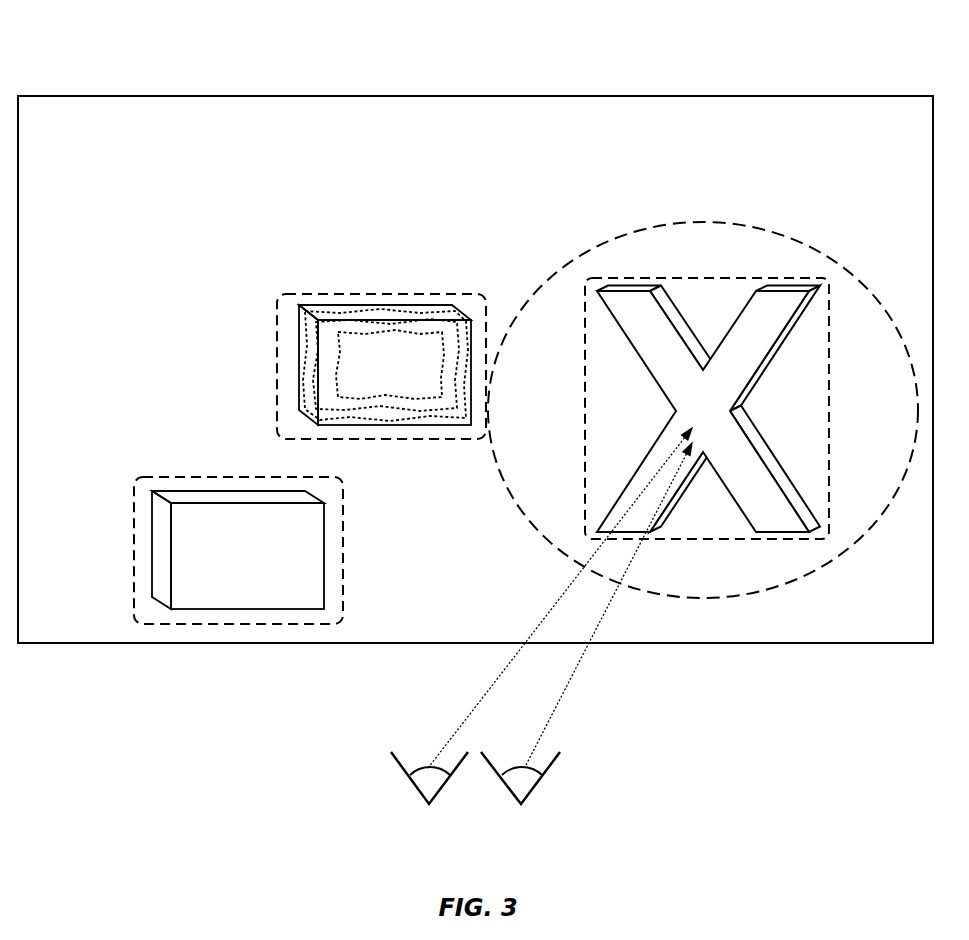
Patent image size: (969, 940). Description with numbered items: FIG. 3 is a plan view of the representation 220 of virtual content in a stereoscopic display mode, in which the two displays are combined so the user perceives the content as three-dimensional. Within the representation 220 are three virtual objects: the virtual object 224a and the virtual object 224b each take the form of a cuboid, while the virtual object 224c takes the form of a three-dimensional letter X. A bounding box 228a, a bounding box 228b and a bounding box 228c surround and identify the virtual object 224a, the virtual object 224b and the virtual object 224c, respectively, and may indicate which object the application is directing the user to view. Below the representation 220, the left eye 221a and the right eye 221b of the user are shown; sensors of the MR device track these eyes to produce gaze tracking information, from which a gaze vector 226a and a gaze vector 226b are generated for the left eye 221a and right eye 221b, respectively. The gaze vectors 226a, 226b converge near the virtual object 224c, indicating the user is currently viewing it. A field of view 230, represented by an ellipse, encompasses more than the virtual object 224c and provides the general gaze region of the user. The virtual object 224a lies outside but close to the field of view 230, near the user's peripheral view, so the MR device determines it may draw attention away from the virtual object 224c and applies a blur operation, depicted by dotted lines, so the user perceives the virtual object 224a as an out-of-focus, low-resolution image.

The representation 220 is at (88, 96).
The left eye 221a is at (402, 777).
The right eye 221b is at (543, 776).
The virtual object 224a is at (412, 303).
The virtual object 224b is at (215, 610).
The virtual object 224c is at (740, 310).
The gaze vector 226a is at (465, 720).
The gaze vector 226b is at (557, 705).
The bounding box 228a is at (278, 312).
The bounding box 228b is at (343, 600).
The bounding box 228c is at (848, 272).
The field of view 230 is at (624, 233).